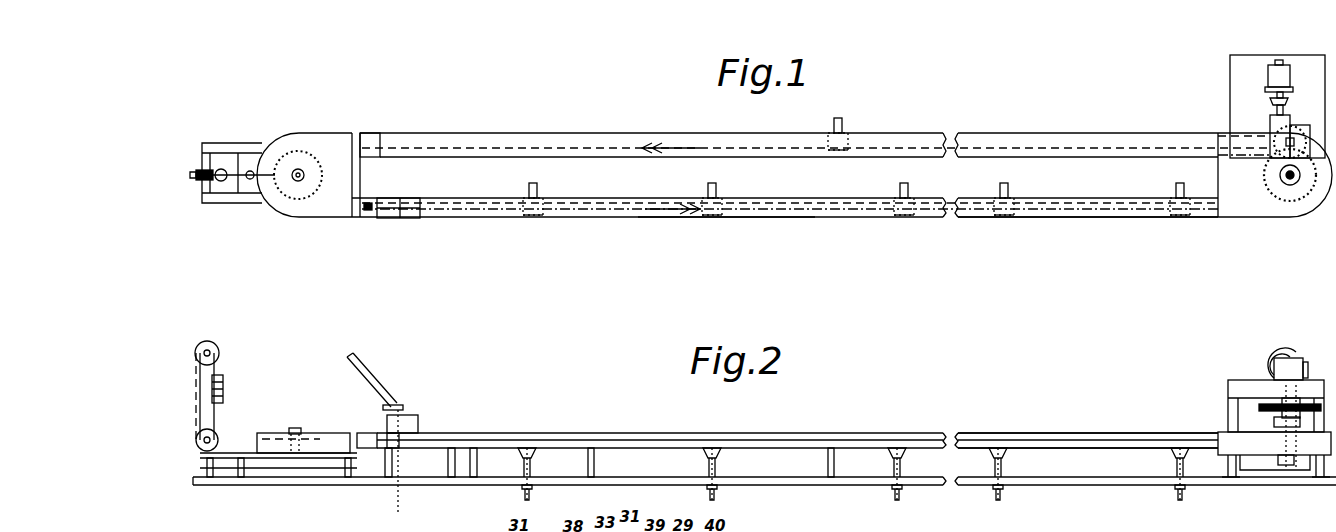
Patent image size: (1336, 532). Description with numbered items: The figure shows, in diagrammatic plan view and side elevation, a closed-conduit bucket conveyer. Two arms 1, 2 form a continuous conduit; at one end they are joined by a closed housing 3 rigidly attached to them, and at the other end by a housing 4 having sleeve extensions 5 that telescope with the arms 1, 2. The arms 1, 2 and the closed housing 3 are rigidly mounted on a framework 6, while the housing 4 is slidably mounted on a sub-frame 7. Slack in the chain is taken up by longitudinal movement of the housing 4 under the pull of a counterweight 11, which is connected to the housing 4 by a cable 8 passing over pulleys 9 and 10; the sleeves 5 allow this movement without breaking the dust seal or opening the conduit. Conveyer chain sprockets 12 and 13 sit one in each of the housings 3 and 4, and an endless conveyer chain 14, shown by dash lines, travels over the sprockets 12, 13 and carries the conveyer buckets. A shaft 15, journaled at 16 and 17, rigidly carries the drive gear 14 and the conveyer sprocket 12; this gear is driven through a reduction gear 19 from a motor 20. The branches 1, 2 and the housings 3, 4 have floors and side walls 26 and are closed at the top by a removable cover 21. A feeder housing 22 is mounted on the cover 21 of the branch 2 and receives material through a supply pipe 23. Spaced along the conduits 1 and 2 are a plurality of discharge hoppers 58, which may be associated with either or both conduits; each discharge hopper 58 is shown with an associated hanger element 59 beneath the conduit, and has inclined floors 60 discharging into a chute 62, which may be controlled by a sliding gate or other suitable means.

In FIG. 1, the arm 1 is at (984, 133).
In FIG. 1, the arm 2 is at (1039, 217).
In FIG. 2, the arm 2 is at (940, 455).
In FIG. 1, the closed housing 3 is at (353, 217).
In FIG. 1, the housing 4 is at (292, 214).
In FIG. 1, the sleeve extensions 5 is at (367, 133).
In FIG. 2, the sleeve extensions 5 is at (398, 423).
In FIG. 1, the framework 6 is at (638, 217).
In FIG. 2, the framework 6 is at (862, 482).
In FIG. 1, the sub-frame 7 is at (259, 143).
In FIG. 2, the sub-frame 7 is at (313, 468).
In FIG. 1, the cable 8 is at (238, 176).
In FIG. 2, the cable 8 is at (198, 383).
In FIG. 2, the pulley 9 is at (213, 436).
In FIG. 1, the pulley 10 is at (198, 178).
In FIG. 2, the pulley 10 is at (216, 352).
In FIG. 1, the counterweight 11 is at (226, 168).
In FIG. 2, the counterweight 11 is at (225, 390).
In FIG. 1, the conveyer chain sprocket 12 is at (1271, 213).
In FIG. 2, the conveyer chain sprocket 12 is at (1271, 442).
In FIG. 1, the conveyer chain sprocket 13 is at (300, 167).
In FIG. 2, the conveyer chain sprocket 13 is at (278, 432).
In FIG. 1, the endless conveyer chain 14 is at (456, 147).
In FIG. 2, the endless conveyer chain 14 is at (1260, 407).
In FIG. 1, the shaft 15 is at (1281, 175).
In FIG. 2, the shaft 15 is at (1286, 472).
In FIG. 1, the journal 16 is at (1305, 134).
In FIG. 2, the journal 16 is at (1303, 472).
In FIG. 2, the journal 17 is at (1272, 423).
In FIG. 1, the reduction gear 19 is at (1290, 126).
In FIG. 2, the reduction gear 19 is at (1304, 361).
In FIG. 1, the motor 20 is at (1290, 70).
In FIG. 2, the motor 20 is at (1276, 346).
In FIG. 1, the removable cover 21 is at (536, 134).
In FIG. 2, the removable cover 21 is at (964, 436).
In FIG. 1, the feeder housing 22 is at (405, 200).
In FIG. 2, the feeder housing 22 is at (411, 415).
In FIG. 1, the supply pipe 23 is at (371, 203).
In FIG. 2, the supply pipe 23 is at (374, 383).
In FIG. 2, the side wall 26 is at (636, 441).
In FIG. 1, the discharge hopper 58 is at (845, 125).
In FIG. 2, the discharge hopper 58 is at (520, 489).
In FIG. 1, the hanger bracket 59 is at (834, 150).
In FIG. 2, the hanger bracket 59 is at (520, 456).
In FIG. 2, the inclined floor 60 is at (533, 456).
In FIG. 2, the chute 62 is at (533, 494).